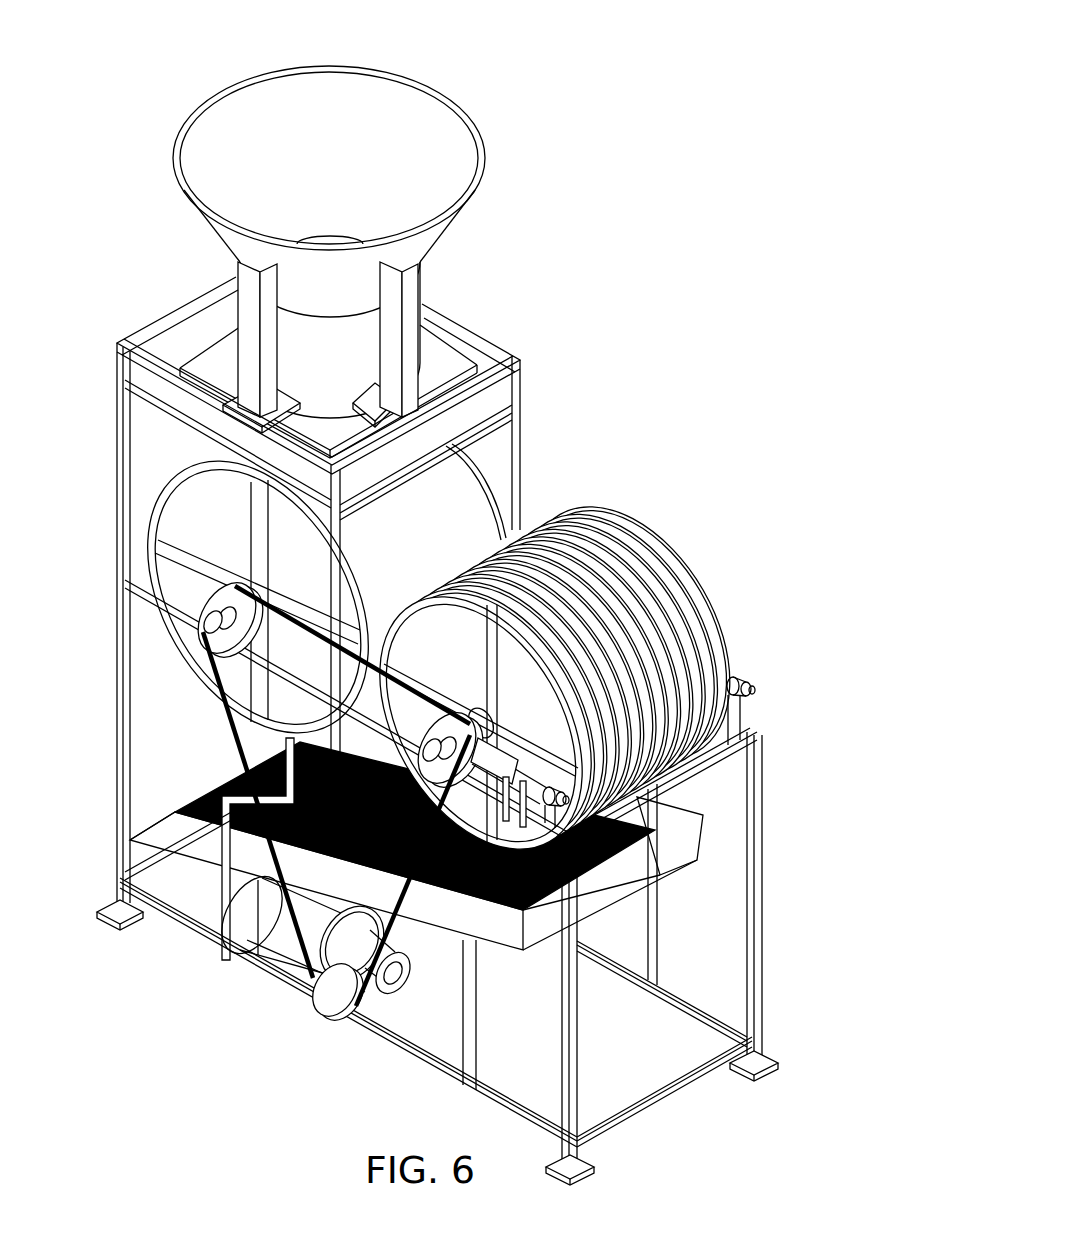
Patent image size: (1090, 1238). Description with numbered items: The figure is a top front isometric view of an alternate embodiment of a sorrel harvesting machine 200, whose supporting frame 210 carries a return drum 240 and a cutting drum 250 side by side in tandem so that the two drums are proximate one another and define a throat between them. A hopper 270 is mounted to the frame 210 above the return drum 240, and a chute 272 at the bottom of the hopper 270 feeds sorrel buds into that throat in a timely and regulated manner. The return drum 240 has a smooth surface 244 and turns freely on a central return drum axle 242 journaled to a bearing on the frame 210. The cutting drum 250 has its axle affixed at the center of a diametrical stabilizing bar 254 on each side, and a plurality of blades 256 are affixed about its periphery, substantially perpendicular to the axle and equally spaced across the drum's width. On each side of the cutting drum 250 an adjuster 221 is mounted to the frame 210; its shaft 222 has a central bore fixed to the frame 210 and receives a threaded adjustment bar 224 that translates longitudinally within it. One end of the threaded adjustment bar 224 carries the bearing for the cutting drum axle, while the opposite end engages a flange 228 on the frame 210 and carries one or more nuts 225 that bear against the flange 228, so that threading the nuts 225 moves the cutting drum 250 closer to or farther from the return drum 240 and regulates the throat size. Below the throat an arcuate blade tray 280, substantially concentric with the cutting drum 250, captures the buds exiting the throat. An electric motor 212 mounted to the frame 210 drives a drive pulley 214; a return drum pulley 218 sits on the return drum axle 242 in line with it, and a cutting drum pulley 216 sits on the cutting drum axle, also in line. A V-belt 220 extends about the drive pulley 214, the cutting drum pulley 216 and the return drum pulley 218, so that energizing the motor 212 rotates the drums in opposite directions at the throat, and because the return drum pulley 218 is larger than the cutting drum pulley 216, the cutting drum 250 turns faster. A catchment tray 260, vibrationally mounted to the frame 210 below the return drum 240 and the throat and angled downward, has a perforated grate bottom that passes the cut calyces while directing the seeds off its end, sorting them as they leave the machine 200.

The sorrel harvesting machine 200 is at (685, 87).
The supporting frame 210 is at (475, 317).
The electric motor 212 is at (283, 945).
The drive pulley 214 is at (328, 1015).
The cutting drum pulley 216 is at (402, 725).
The return drum pulley 218 is at (205, 605).
The V-belt 220 is at (230, 712).
The adjuster 221 is at (677, 650).
The shaft 222 is at (526, 755).
The threaded adjustment bar 224 is at (750, 694).
The nuts 225 is at (743, 680).
The flange 228 is at (483, 900).
The return drum 240 is at (480, 487).
The return drum axle 242 is at (200, 610).
The smooth surface 244 is at (420, 539).
The cutting drum 250 is at (566, 677).
The diametrical stabilizing bar 254 is at (467, 650).
The blades 256 is at (708, 640).
The catchment tray 260 is at (483, 849).
The hopper 270 is at (483, 150).
The chute 272 is at (483, 412).
The blade tray 280 is at (300, 742).